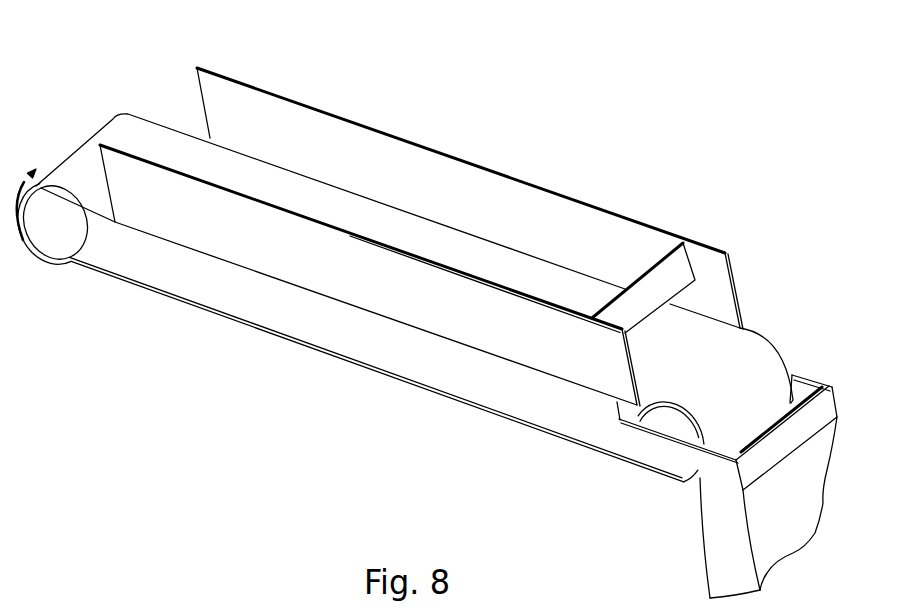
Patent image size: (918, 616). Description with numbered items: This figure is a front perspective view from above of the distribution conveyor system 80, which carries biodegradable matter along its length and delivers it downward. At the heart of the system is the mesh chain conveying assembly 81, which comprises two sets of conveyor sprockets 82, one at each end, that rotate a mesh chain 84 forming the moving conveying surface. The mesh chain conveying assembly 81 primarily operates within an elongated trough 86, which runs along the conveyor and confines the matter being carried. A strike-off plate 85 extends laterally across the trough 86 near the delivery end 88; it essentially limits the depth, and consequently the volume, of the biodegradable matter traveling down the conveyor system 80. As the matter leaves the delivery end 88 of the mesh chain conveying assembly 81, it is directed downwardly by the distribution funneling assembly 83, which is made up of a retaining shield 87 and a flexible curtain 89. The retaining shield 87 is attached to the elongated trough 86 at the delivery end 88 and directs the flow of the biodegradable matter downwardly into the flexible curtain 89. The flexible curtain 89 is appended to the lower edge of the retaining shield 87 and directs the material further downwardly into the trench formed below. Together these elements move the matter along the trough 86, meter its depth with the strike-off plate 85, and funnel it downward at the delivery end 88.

The distribution conveyor system 80 is at (488, 128).
The mesh chain conveying assembly 81 is at (182, 145).
The conveyor sprockets 82 is at (95, 227).
The distribution funneling assembly 83 is at (825, 356).
The mesh chain 84 is at (395, 227).
The strike-off plate 85 is at (648, 283).
The elongated trough 86 is at (293, 130).
The retaining shield 87 is at (807, 388).
The delivery end 88 is at (752, 408).
The flexible curtain 89 is at (728, 532).